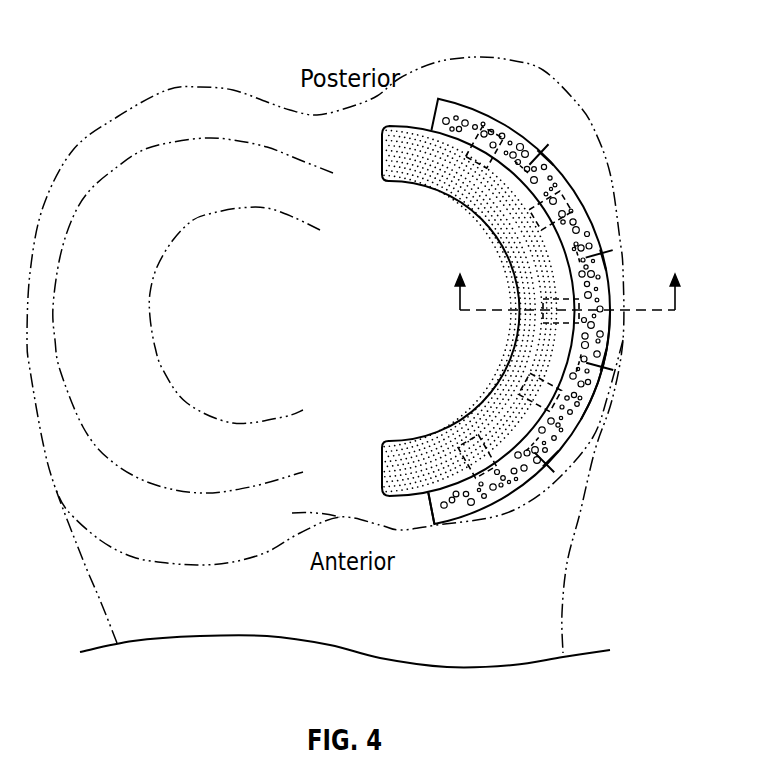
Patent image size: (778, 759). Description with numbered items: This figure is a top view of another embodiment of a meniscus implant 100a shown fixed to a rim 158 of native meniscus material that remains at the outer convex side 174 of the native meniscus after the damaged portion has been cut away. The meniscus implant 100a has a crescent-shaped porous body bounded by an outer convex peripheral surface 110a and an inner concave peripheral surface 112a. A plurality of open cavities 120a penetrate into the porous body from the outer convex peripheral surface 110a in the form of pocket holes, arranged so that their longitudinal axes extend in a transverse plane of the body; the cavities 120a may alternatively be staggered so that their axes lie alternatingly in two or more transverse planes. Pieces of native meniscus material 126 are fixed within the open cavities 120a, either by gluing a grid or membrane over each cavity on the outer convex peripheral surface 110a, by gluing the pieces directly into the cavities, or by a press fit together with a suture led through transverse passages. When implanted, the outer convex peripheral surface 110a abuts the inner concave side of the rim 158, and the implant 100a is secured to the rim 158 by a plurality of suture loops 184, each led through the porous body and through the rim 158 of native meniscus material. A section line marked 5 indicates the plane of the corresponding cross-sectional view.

The meniscus implant 100a is at (586, 82).
The outer convex peripheral surface 110a is at (514, 152).
The inner concave peripheral surface 112a is at (507, 375).
The open cavities 120a is at (465, 455).
The pieces of native meniscus material 126 is at (557, 227).
The rim of native meniscus material 158 is at (595, 401).
The outer convex side 174 is at (460, 527).
The suture loops 184 is at (548, 147).
The section line 5- 5 is at (567, 277).